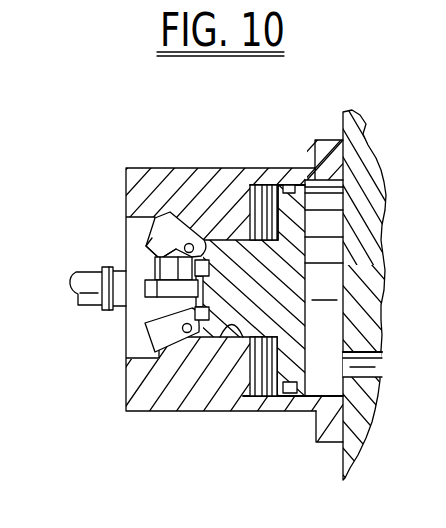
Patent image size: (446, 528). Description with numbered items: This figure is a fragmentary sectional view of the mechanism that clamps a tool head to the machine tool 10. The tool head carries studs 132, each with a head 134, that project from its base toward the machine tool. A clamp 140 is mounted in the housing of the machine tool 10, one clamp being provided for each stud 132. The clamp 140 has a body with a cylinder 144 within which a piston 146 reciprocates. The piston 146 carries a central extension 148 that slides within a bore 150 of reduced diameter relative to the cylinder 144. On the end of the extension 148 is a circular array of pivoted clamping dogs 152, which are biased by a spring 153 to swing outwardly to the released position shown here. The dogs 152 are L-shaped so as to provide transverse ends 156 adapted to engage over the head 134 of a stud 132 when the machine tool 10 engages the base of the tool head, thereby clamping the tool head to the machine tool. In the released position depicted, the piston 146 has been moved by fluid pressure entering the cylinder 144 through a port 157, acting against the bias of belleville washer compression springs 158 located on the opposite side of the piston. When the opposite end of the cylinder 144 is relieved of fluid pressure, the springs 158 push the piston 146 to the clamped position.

The machine tool 10 is at (280, 295).
The stud 132 is at (79, 270).
The head 134 is at (107, 313).
The clamp 140 is at (207, 168).
The cylinder 144 is at (333, 396).
The piston 146 is at (324, 200).
The central extension 148 is at (229, 243).
The bore 150 is at (215, 337).
The clamping dogs 152 is at (164, 220).
The spring 153 is at (153, 258).
The transverse ends 156 is at (156, 241).
The port 157 is at (380, 352).
The belleville washer compression springs 158 is at (263, 394).